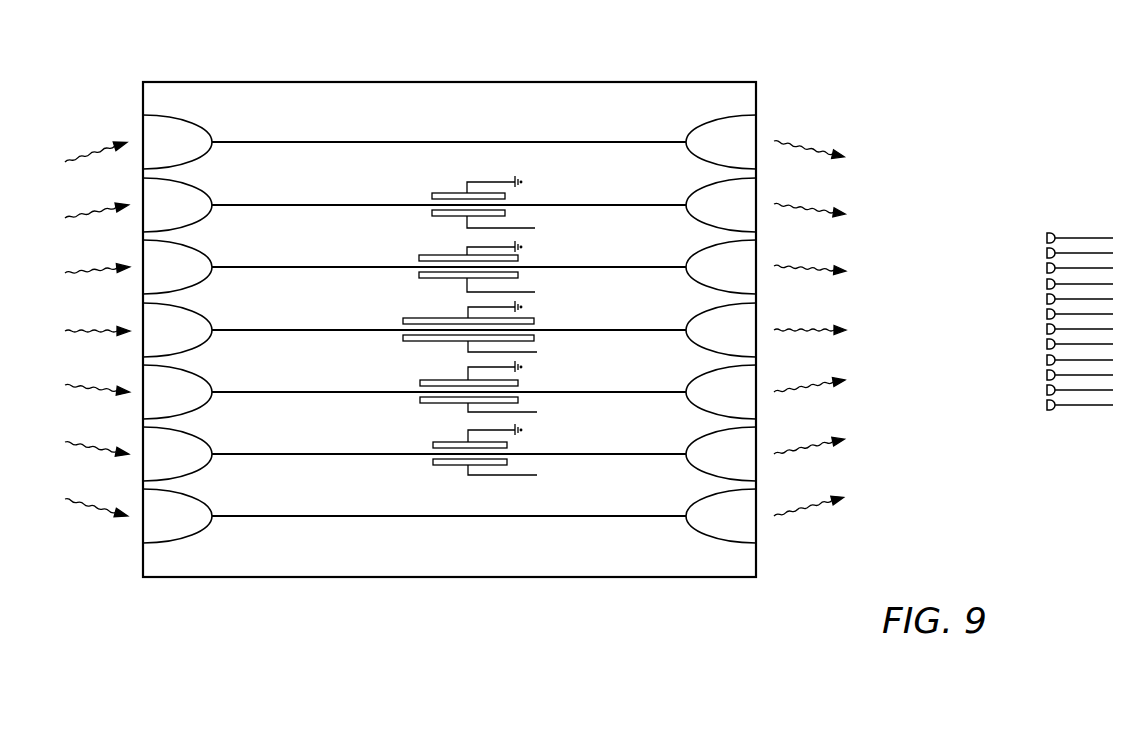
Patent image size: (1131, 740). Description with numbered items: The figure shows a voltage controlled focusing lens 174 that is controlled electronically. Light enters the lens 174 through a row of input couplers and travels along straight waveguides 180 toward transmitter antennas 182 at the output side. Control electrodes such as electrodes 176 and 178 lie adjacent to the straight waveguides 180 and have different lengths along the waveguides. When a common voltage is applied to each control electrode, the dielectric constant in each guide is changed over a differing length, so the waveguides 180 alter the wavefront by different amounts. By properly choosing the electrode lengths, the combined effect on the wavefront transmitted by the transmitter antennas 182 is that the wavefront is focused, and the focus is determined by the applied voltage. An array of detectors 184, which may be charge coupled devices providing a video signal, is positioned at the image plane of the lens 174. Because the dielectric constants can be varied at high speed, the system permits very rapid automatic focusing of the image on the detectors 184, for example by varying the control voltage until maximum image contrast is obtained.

The lens 174 is at (318, 74).
The electrode 176 is at (432, 214).
The electrode 178 is at (420, 277).
The straight waveguide 180 is at (333, 204).
The transmitter antenna 182 is at (743, 177).
The array of detectors 184 is at (1049, 232).